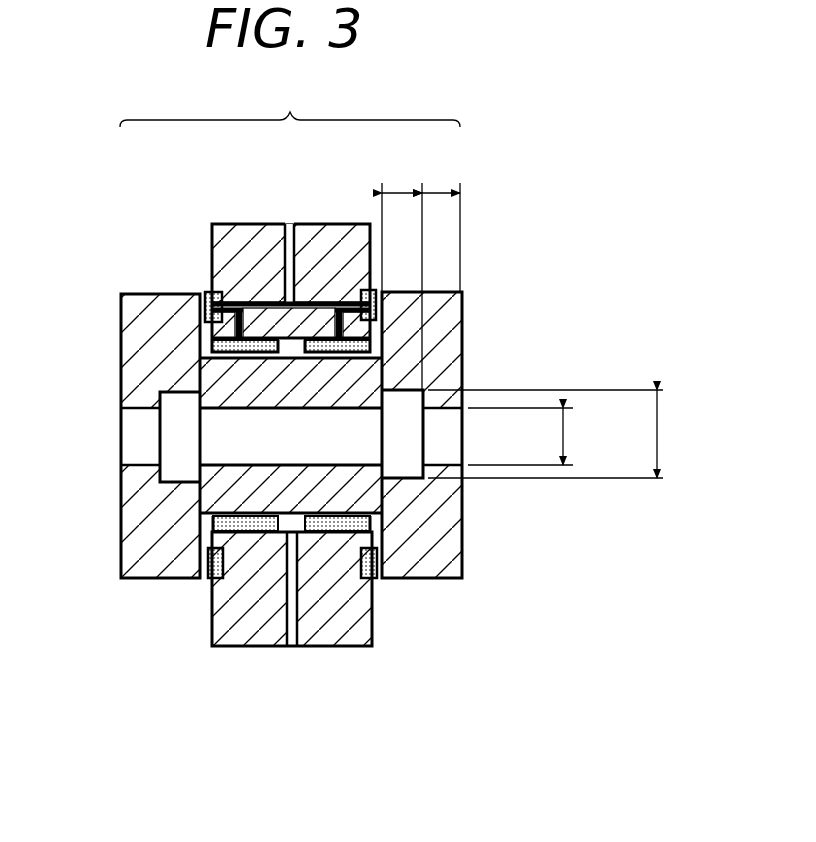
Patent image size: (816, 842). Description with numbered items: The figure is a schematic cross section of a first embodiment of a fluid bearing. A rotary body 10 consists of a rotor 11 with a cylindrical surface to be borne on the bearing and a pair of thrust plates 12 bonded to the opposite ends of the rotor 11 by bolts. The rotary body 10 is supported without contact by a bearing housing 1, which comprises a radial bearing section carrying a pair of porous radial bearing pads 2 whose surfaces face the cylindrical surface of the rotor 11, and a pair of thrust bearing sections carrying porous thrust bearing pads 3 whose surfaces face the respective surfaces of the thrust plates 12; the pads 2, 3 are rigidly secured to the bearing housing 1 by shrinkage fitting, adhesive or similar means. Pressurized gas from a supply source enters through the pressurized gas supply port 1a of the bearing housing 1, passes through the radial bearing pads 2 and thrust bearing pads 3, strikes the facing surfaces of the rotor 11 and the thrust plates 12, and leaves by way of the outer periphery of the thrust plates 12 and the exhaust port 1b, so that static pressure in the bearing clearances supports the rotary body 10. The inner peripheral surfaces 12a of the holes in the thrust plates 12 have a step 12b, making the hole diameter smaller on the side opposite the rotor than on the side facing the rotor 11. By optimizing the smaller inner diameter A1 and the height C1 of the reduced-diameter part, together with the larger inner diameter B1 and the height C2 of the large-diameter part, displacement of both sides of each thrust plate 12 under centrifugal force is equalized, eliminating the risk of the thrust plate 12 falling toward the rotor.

The rotary body 10 is at (303, 104).
The bearing housing 1 is at (343, 232).
The pressurized gas supply port 1a is at (290, 232).
The exhaust port 1b is at (292, 646).
The porous radial bearing pads 2 is at (237, 533).
The porous thrust bearing pads 3 is at (209, 565).
The rotor 11 is at (235, 383).
The thrust plates 12 is at (131, 344).
The inner peripheral surfaces 12a is at (158, 465).
The step 12b is at (172, 482).
The inner diameter of the reduced-diameter part A1 is at (566, 433).
The inner diameter of the large-diameter part B1 is at (660, 433).
The height of the reduced-diameter part C1 is at (439, 192).
The height of the large-diameter part C2 is at (399, 192).